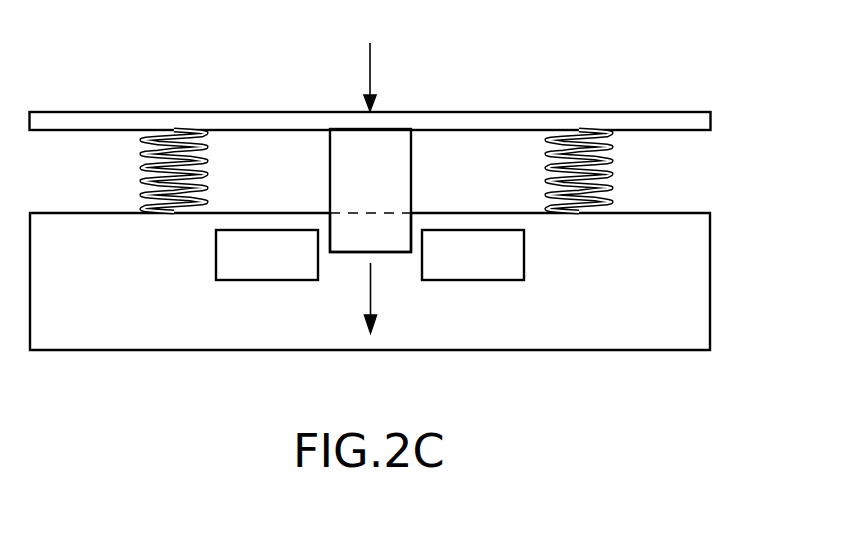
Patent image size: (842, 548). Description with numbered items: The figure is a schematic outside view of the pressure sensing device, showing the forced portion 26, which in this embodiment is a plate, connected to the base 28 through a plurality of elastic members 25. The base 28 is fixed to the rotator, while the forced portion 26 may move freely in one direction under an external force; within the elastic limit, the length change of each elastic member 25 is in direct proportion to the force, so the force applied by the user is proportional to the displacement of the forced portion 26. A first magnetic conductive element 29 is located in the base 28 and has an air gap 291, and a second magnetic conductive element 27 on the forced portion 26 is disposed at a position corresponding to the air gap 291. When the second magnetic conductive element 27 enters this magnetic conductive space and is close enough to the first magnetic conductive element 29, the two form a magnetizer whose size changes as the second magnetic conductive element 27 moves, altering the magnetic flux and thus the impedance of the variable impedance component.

The elastic member 25 is at (611, 168).
The forced portion 26 is at (697, 121).
The second magnetic conductive element 27 is at (397, 165).
The base 28 is at (697, 302).
The first magnetic conductive element 29 is at (498, 274).
The air gap 291 is at (401, 270).